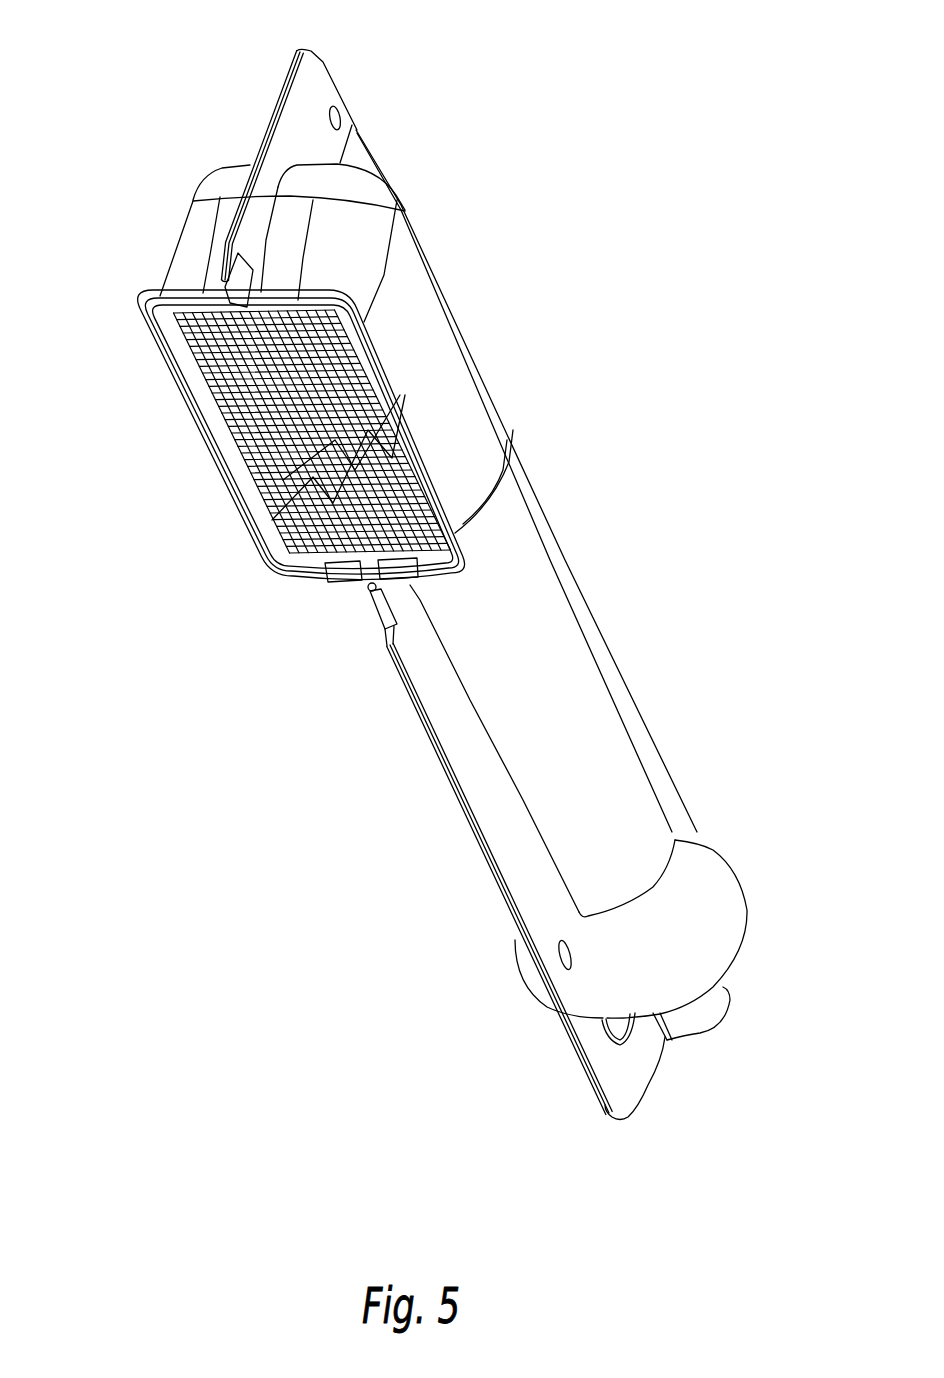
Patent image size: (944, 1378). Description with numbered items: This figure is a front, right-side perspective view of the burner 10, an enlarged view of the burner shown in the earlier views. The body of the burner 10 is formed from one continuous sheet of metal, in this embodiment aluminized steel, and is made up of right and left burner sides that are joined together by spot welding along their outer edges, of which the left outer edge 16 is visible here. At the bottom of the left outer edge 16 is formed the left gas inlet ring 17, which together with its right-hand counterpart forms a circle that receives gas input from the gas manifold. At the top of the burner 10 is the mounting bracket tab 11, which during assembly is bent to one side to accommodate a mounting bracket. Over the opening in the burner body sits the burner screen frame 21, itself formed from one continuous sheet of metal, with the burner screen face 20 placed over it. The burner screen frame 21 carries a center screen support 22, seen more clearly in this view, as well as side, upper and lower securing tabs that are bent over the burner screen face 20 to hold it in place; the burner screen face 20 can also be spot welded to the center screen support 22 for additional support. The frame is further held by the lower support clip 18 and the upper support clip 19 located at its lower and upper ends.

The burner 10 is at (615, 66).
The mounting bracket tab 11 is at (310, 93).
The left outer edge 16 is at (500, 827).
The left gas inlet ring 17 is at (682, 1010).
The lower support clip 18 is at (382, 612).
The upper support clip 19 is at (158, 298).
The burner screen face 20 is at (243, 432).
The burner screen frame 21 is at (393, 443).
The center screen support 22 is at (257, 557).